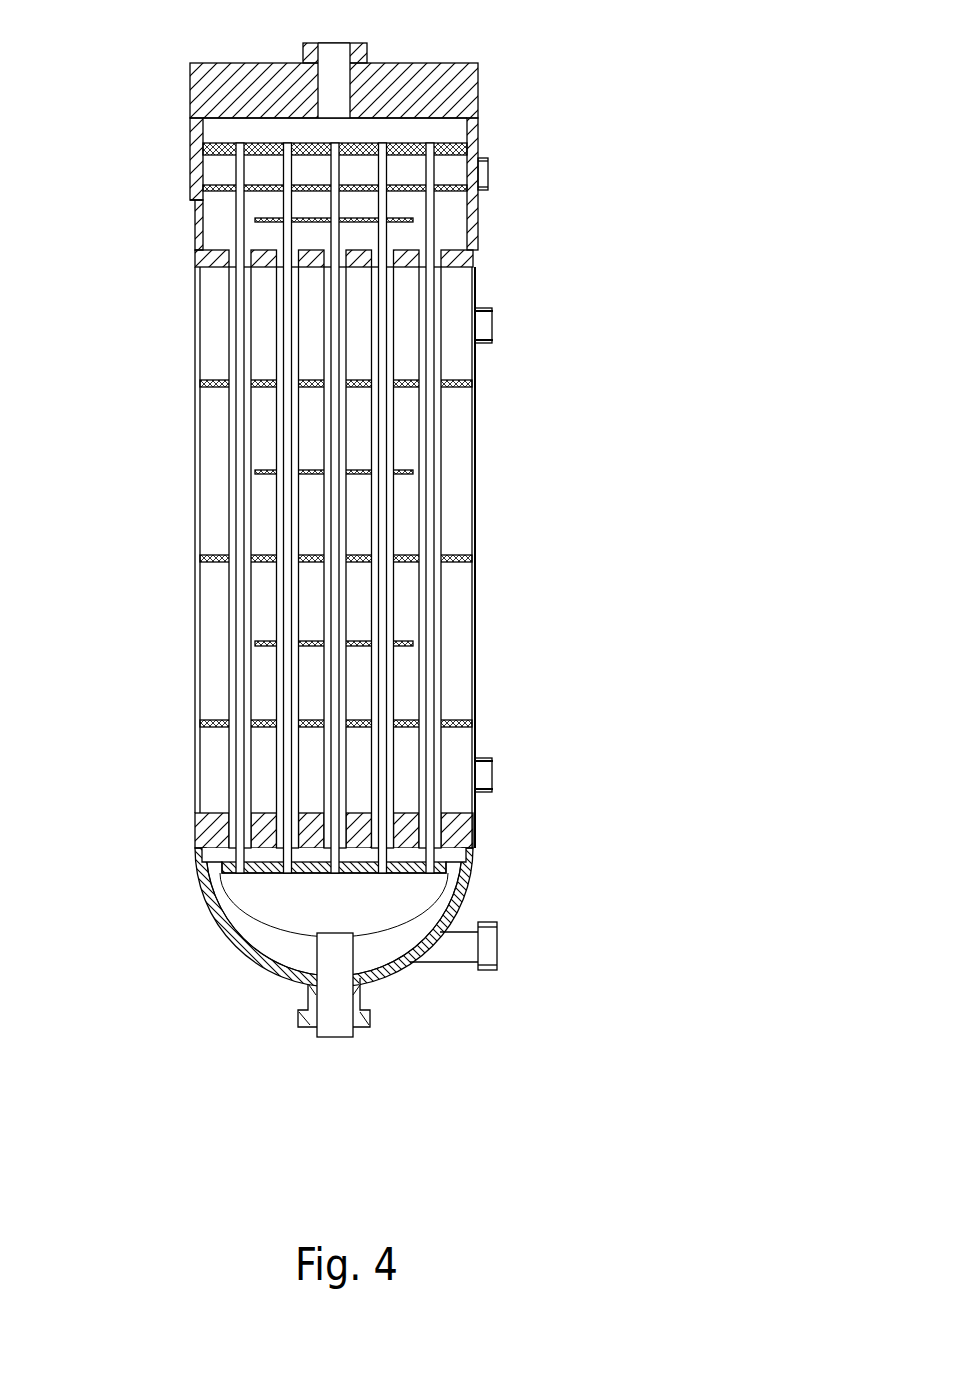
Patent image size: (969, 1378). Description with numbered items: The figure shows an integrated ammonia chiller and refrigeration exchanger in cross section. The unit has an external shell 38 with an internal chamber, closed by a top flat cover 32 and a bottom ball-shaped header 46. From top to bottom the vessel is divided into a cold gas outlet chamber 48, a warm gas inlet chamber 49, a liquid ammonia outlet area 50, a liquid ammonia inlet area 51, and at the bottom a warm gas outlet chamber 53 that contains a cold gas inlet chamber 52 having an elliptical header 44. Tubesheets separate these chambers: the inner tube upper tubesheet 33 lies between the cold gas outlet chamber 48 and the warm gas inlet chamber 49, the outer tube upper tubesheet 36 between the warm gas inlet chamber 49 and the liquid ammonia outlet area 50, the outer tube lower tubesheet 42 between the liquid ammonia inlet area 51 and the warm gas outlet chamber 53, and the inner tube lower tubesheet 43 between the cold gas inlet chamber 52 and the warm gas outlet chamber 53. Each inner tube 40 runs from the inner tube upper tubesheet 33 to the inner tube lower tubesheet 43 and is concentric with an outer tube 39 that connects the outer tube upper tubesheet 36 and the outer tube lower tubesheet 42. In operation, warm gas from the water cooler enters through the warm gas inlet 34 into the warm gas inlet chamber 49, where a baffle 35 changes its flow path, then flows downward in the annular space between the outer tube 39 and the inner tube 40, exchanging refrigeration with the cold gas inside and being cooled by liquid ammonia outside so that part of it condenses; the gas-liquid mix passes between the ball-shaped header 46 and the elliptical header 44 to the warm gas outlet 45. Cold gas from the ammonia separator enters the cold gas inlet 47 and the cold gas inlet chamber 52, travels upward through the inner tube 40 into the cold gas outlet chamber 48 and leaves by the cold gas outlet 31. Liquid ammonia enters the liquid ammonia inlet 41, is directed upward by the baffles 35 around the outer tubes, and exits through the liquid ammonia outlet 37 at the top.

The cold gas outlet 31 is at (337, 75).
The top flat cover 32 is at (479, 103).
The inner tube upper tubesheet 33 is at (479, 148).
The warm gas inlet 34 is at (488, 170).
The baffle 35 is at (476, 200).
The outer tube upper tubesheet 36 is at (474, 270).
The liquid ammonia outlet 37 is at (488, 327).
The external shell 38 is at (475, 405).
The outer tube 39 is at (433, 465).
The inner tube 40 is at (430, 558).
The liquid ammonia inlet 41 is at (495, 763).
The outer tube lower tubesheet 42 is at (475, 823).
The inner tube lower tubesheet 43 is at (472, 862).
The elliptical header 44 is at (445, 898).
The warm gas outlet 45 is at (497, 948).
The bottom ball-shaped header 46 is at (400, 977).
The cold gas inlet 47 is at (347, 1035).
The cold gas outlet chamber 48 is at (217, 132).
The warm gas inlet chamber 49 is at (217, 218).
The liquid ammonia outlet area 50 is at (217, 347).
The liquid ammonia inlet area 51 is at (217, 782).
The cold gas inlet chamber 52 is at (245, 890).
The warm gas outlet chamber 53 is at (272, 946).